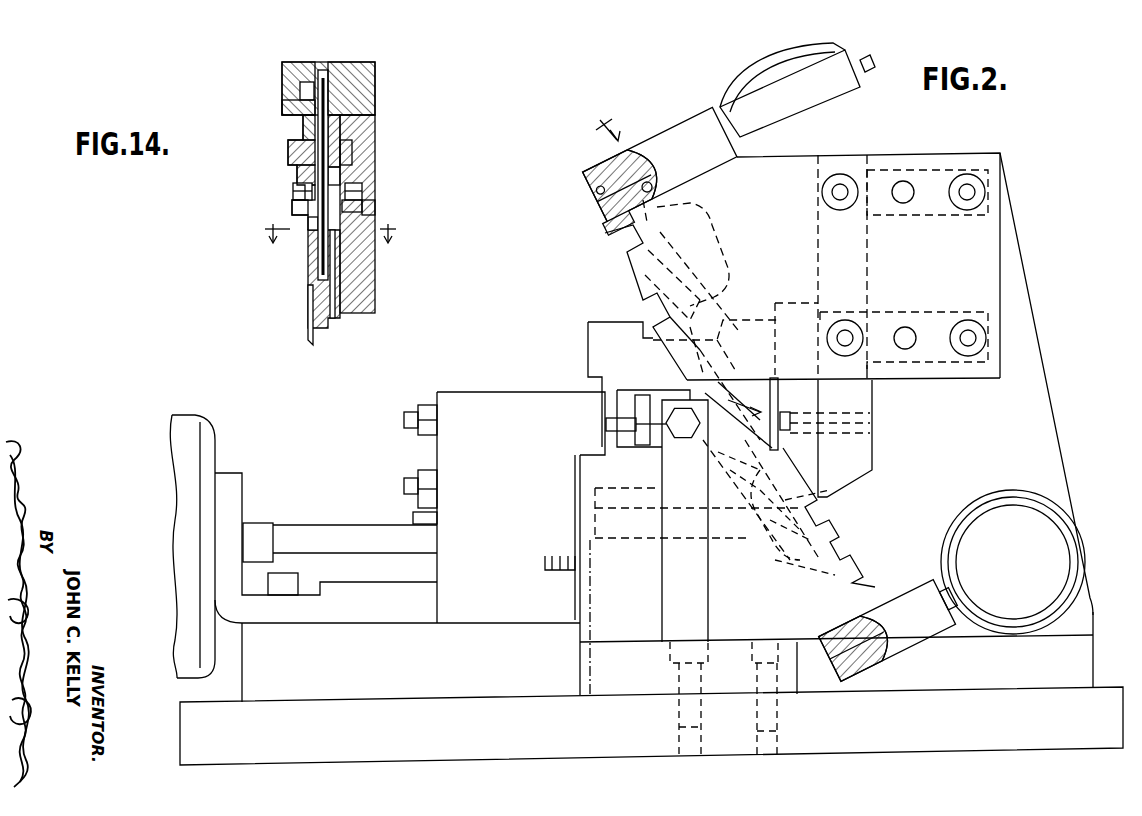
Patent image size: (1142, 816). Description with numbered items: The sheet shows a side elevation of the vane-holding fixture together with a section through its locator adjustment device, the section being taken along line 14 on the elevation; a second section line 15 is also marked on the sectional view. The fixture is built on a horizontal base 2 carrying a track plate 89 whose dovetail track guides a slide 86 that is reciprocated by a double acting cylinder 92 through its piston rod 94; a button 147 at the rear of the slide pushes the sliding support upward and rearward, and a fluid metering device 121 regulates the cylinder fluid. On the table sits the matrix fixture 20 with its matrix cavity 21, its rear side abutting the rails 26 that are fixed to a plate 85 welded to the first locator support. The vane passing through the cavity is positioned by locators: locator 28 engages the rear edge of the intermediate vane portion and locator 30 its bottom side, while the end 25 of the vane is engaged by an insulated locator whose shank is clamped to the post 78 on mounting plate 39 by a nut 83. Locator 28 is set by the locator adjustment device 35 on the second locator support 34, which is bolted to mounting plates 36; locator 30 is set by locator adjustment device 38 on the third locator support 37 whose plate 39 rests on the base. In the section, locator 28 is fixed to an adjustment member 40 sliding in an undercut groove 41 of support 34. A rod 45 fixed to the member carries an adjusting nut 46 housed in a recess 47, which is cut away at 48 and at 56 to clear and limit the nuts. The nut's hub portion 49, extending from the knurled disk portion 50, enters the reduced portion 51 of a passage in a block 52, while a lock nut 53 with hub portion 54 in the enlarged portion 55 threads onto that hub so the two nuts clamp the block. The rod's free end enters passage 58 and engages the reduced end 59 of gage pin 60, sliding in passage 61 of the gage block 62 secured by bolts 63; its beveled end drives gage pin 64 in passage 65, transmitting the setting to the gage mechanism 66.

In FIG. 2, the base 2 is at (484, 752).
In FIG. 2, the section line 14— 14 is at (679, 272).
In FIG. 14, the section line 15 is at (333, 242).
In FIG. 2, the matrix fixture 20 is at (587, 356).
In FIG. 2, the matrix cavity 21 is at (622, 392).
In FIG. 2, the end of the vane 25 is at (641, 395).
In FIG. 2, the rails 26 is at (820, 418).
In FIG. 14, the locator 28 is at (308, 332).
In FIG. 2, the locator 28 is at (760, 405).
In FIG. 2, the locator 30 is at (684, 446).
In FIG. 14, the second locator support 34 is at (372, 282).
In FIG. 2, the second locator support 34 is at (977, 268).
In FIG. 14, the locator adjustment device 35 is at (243, 205).
In FIG. 2, the locator adjustment device 35 is at (626, 284).
In FIG. 2, the mounting plates 36 is at (945, 160).
In FIG. 2, the third locator support 37 is at (610, 620).
In FIG. 2, the locator adjustment device 38 is at (844, 541).
In FIG. 2, the mounting plate 39 is at (626, 690).
In FIG. 14, the adjustment member 40 is at (330, 322).
In FIG. 14, the undercut groove 41 is at (338, 300).
In FIG. 14, the rod 45 is at (318, 256).
In FIG. 14, the adjusting nut 46 is at (288, 160).
In FIG. 14, the recess 47 is at (345, 132).
In FIG. 14, the cut-away 48 is at (352, 156).
In FIG. 14, the hub portion 49 is at (310, 186).
In FIG. 14, the knurled disk portion 50 is at (300, 170).
In FIG. 14, the reduced portion 51 is at (350, 180).
In FIG. 14, the block 52 is at (298, 212).
In FIG. 14, the lock nut 53 is at (355, 210).
In FIG. 14, the hub portion 54 is at (352, 196).
In FIG. 14, the enlarged portion 55 is at (300, 222).
In FIG. 14, the cut-away 56 is at (375, 226).
In FIG. 14, the passage 58 is at (305, 128).
In FIG. 14, the reduced end 59 is at (290, 110).
In FIG. 14, the gage pin 60 is at (350, 92).
In FIG. 2, the gage pin 60 is at (598, 218).
In FIG. 14, the passage 61 is at (300, 92).
In FIG. 2, the passage 61 is at (650, 190).
In FIG. 14, the gage block 62 is at (375, 68).
In FIG. 2, the gage block 62 is at (697, 126).
In FIG. 14, the bolts 63 is at (282, 72).
In FIG. 2, the gage pin 64 is at (643, 150).
In FIG. 2, the passage 65 is at (592, 178).
In FIG. 2, the gage mechanism 66 is at (738, 76).
In FIG. 2, the post 78 is at (702, 625).
In FIG. 2, the nut 83 is at (672, 436).
In FIG. 2, the plate 85 is at (860, 278).
In FIG. 2, the slide 86 is at (488, 392).
In FIG. 2, the track plate 89 is at (398, 688).
In FIG. 2, the double acting cylinder 92 is at (215, 440).
In FIG. 2, the piston rod 94 is at (338, 532).
In FIG. 2, the fluid metering device 121 is at (418, 405).
In FIG. 2, the button 147 is at (600, 566).